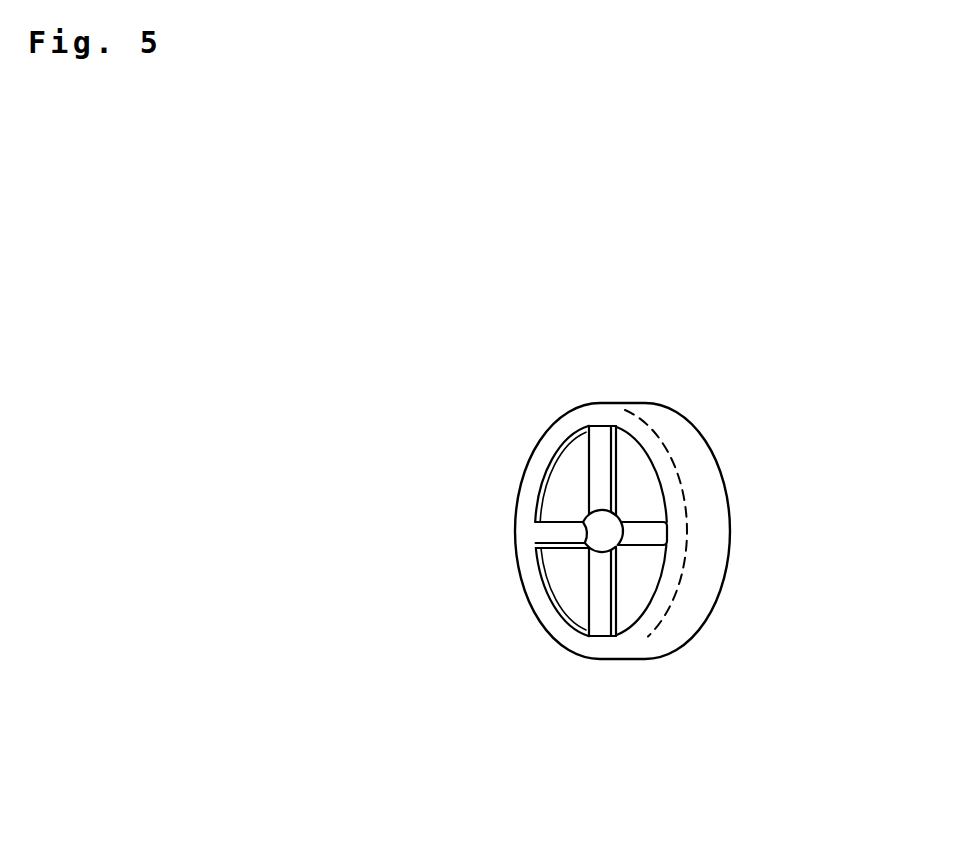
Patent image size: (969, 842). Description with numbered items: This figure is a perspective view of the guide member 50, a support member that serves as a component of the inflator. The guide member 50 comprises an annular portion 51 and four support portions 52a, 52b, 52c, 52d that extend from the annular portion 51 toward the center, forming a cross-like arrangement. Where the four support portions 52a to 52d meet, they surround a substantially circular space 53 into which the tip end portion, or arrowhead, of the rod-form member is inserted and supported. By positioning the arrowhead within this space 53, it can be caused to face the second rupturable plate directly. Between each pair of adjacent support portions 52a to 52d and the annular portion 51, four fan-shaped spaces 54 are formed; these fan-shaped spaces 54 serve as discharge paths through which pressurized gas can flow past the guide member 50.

The guide member 50 is at (708, 405).
The annular portion 51 is at (697, 462).
The support portion 52a is at (553, 535).
The support portion 52b is at (592, 596).
The support portion 52c is at (645, 540).
The support portion 52d is at (597, 458).
The space 53 is at (587, 532).
The fan-shaped space 54 is at (637, 487).